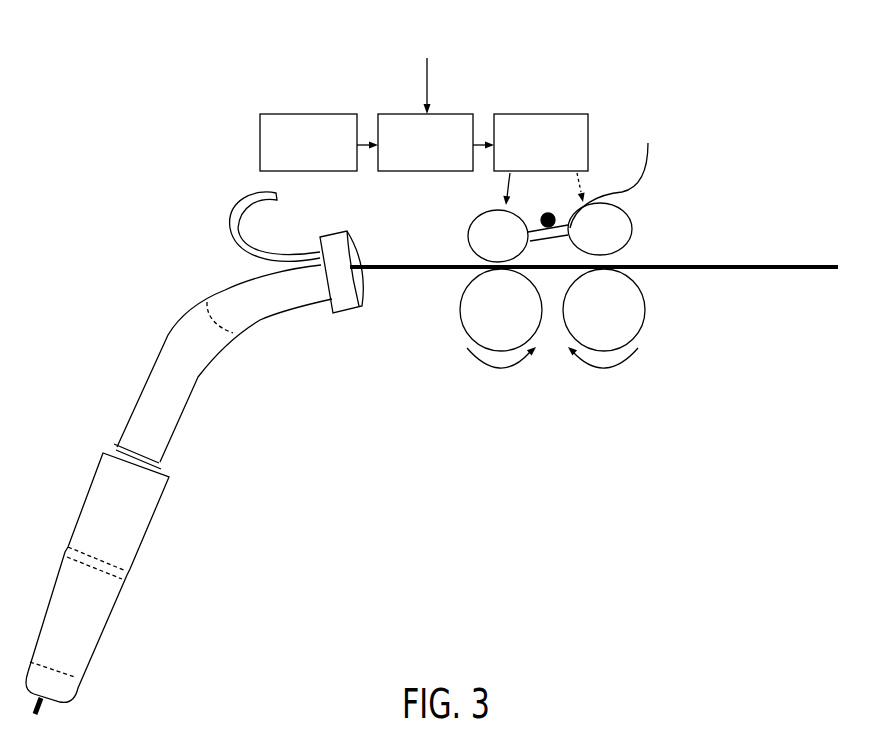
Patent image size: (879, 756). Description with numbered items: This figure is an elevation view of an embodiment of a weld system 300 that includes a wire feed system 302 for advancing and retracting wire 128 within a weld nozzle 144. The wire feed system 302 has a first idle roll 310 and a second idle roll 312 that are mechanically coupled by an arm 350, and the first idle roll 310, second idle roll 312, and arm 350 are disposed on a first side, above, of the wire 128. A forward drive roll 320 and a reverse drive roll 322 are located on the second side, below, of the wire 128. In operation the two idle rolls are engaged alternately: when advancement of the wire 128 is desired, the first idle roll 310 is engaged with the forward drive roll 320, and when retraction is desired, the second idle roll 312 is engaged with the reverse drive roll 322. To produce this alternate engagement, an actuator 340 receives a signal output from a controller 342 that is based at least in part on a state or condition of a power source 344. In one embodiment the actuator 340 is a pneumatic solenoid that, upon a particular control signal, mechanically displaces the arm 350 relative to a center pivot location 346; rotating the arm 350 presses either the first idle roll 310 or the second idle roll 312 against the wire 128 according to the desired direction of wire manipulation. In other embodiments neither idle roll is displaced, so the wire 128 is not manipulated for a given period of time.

The weld system 300 is at (78, 135).
The power source 344 is at (331, 113).
The controller 342 is at (413, 113).
The actuator 340 is at (543, 113).
The wire feed system 302 is at (530, 216).
The first idle roll 310 is at (488, 238).
The second idle roll 312 is at (623, 237).
The center pivot location 346 is at (547, 213).
The arm 350 is at (619, 176).
The forward drive roll 320 is at (481, 320).
The reverse drive roll 322 is at (632, 320).
The wire 128 is at (697, 263).
The weld nozzle 144 is at (183, 517).